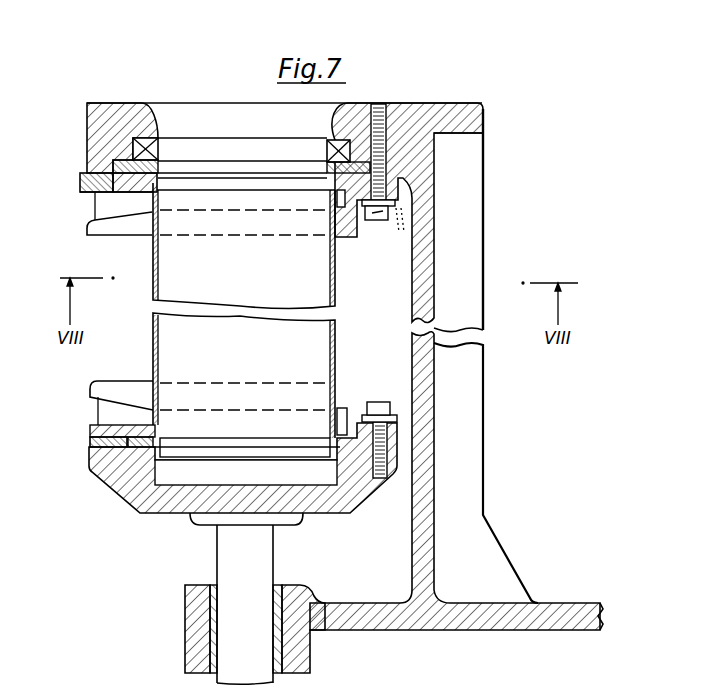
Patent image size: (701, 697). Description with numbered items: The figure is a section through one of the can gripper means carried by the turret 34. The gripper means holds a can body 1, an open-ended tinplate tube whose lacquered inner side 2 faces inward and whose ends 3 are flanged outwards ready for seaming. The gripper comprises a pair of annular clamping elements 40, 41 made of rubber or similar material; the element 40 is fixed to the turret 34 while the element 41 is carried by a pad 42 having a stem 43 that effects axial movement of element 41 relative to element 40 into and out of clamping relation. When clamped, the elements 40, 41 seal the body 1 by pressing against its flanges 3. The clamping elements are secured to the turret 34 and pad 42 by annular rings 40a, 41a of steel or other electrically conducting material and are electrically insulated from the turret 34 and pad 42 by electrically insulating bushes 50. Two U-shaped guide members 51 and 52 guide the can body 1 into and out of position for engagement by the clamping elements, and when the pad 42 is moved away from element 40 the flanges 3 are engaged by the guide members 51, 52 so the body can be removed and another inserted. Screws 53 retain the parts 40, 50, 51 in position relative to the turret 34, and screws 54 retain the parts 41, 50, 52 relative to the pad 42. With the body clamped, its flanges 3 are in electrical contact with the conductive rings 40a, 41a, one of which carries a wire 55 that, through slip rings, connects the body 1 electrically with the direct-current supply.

The body 1 is at (337, 358).
The side 2 is at (332, 342).
The ends 3 is at (149, 190).
The turret 34 is at (420, 208).
The annular clamping element 40 is at (157, 180).
The annular ring 40a is at (88, 192).
The annular clamping element 41 is at (157, 440).
The annular ring 41a is at (90, 427).
The pad 42 is at (152, 500).
The stem 43 is at (233, 558).
The electrically insulating bushes 50 is at (90, 182).
The guide member 51 is at (88, 232).
The guide member 52 is at (98, 393).
The screw 53 is at (380, 217).
The screw 54 is at (378, 408).
The wire 55 is at (399, 210).